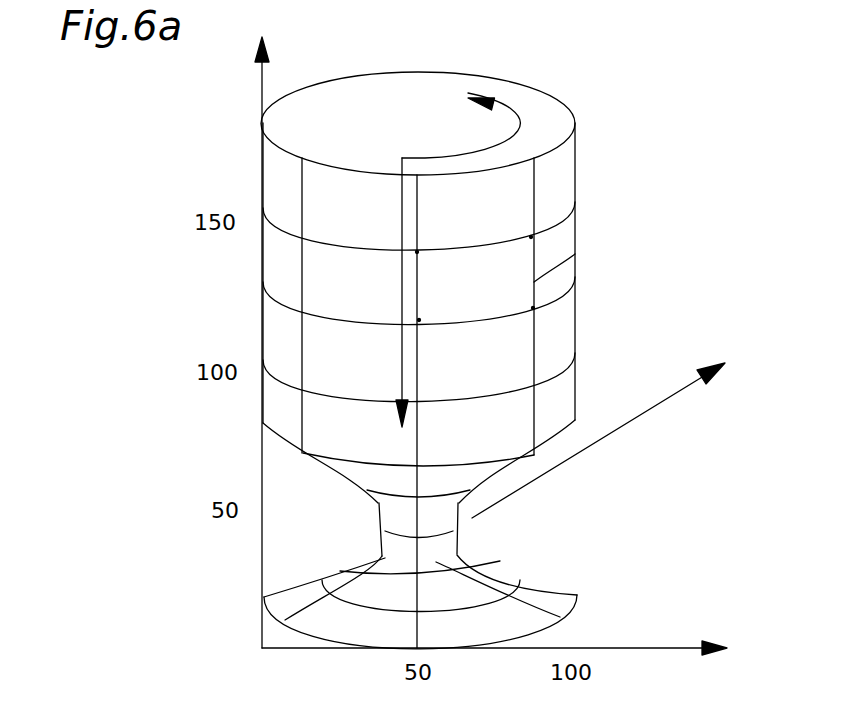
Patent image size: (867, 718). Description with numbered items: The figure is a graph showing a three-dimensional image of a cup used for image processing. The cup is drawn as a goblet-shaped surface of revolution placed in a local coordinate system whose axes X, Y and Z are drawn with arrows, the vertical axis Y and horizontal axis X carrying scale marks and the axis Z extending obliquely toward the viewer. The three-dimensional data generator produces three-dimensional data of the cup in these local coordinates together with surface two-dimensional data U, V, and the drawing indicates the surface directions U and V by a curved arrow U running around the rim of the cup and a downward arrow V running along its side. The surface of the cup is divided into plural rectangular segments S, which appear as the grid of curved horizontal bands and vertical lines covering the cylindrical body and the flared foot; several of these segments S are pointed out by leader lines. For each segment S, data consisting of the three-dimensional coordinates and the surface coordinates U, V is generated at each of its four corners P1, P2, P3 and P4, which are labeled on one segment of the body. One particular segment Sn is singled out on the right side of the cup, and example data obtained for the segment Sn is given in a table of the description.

The rectangular segment S is at (512, 192).
The segment Sn is at (577, 254).
The first corner of segment P1 is at (418, 252).
The second corner of segment P2 is at (530, 238).
The third corner of segment P3 is at (533, 308).
The fourth corner of segment P4 is at (420, 320).
The surface two-dimensional coordinate U is at (461, 119).
The surface two-dimensional coordinate V is at (387, 302).
The X axis of local coordinates X is at (511, 639).
The Y axis of local coordinates Y is at (243, 342).
The Z axis of local coordinates Z is at (618, 432).